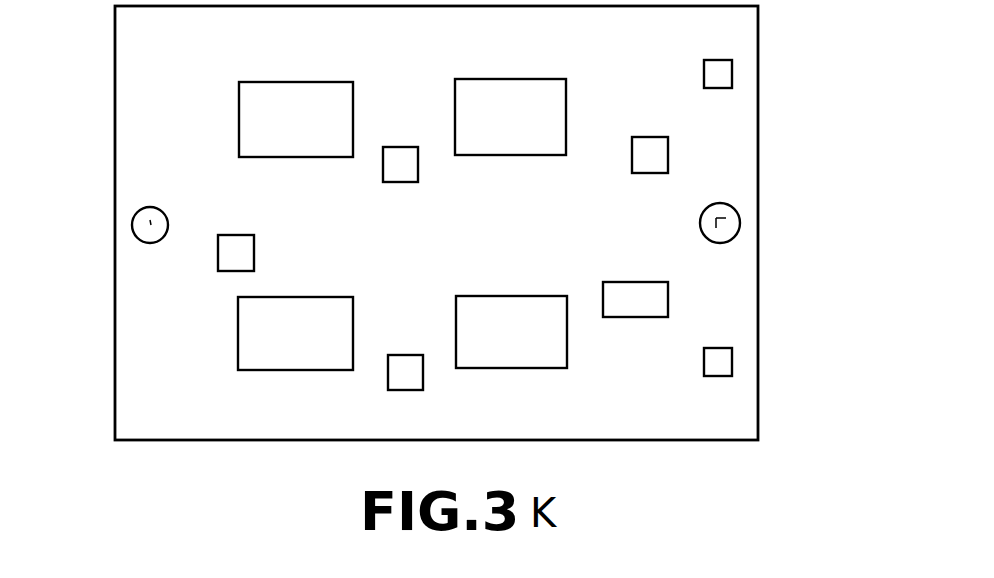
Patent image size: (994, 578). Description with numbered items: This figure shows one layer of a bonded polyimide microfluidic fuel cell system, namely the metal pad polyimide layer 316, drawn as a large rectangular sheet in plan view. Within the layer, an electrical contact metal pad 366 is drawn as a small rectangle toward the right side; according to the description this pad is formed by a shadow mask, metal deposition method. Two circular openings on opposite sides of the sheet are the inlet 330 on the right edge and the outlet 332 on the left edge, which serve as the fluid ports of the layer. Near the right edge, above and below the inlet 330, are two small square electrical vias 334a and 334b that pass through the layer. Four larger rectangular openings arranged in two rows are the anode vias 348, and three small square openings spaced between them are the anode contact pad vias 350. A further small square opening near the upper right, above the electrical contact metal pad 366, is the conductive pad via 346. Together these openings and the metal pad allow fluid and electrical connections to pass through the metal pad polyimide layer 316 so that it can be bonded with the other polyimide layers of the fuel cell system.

The metal pad polyimide layer 316 is at (672, 410).
The anode vias 348 is at (326, 135).
The anode contact pad vias 350 is at (398, 370).
The conductive pad via 346 is at (647, 152).
The electrical contact metal pad 366 is at (635, 298).
The inlet 330 is at (728, 222).
The outlet 332 is at (145, 232).
The electrical via 334a is at (727, 79).
The electrical via 334b is at (727, 363).